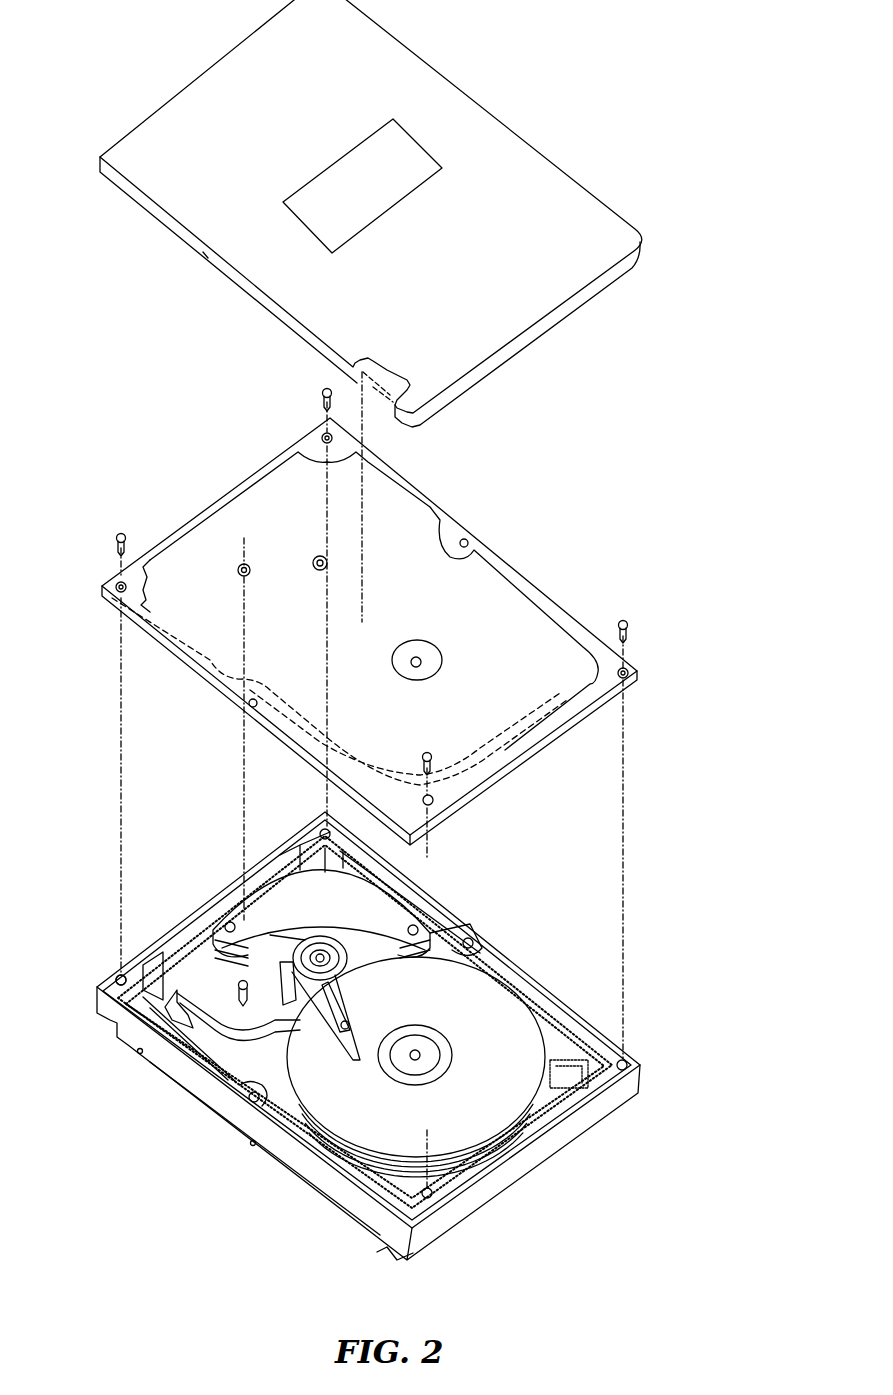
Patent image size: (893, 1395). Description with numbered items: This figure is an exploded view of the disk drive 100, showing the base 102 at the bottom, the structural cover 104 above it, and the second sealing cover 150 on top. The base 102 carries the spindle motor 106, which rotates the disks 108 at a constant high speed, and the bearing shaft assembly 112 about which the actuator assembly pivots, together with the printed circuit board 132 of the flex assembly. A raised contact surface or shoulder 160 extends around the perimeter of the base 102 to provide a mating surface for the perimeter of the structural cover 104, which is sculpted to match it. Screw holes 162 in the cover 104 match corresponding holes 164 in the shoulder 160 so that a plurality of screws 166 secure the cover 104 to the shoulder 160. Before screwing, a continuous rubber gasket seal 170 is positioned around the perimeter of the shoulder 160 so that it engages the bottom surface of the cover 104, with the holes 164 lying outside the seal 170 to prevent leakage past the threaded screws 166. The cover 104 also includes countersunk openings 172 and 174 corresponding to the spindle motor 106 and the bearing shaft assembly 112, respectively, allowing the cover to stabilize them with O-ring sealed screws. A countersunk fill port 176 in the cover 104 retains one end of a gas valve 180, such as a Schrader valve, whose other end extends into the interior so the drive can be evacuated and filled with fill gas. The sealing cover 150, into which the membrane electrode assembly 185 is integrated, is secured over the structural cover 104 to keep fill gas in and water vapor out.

The disk drive 100 is at (687, 490).
The base 102 is at (342, 1045).
The structural cover 104 is at (369, 631).
The spindle motor 106 is at (446, 1040).
The disks 108 is at (435, 1009).
The bearing shaft assembly 112 is at (321, 953).
The printed circuit board 132 is at (403, 1262).
The sealing cover 150 is at (371, 213).
The raised contact surface or shoulder 160 is at (375, 1194).
The screw holes 162 is at (433, 801).
The holes 164 is at (112, 975).
The screws 166 is at (123, 536).
The seal 170 is at (485, 958).
The countersunk opening 172 is at (421, 661).
The countersunk opening 174 is at (320, 558).
The fill port 176 is at (250, 572).
The gas valve 180 is at (238, 985).
The membrane electrode assembly 185 is at (316, 201).